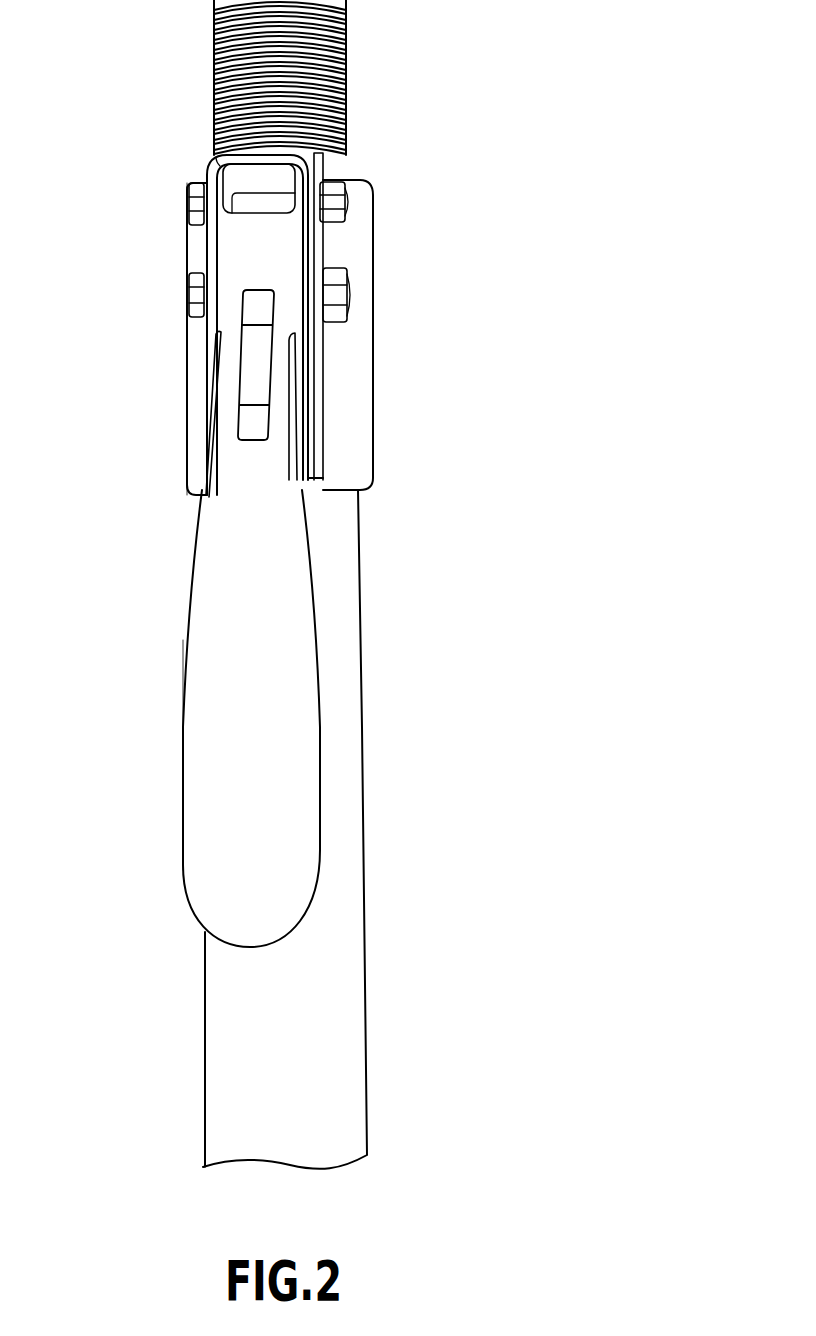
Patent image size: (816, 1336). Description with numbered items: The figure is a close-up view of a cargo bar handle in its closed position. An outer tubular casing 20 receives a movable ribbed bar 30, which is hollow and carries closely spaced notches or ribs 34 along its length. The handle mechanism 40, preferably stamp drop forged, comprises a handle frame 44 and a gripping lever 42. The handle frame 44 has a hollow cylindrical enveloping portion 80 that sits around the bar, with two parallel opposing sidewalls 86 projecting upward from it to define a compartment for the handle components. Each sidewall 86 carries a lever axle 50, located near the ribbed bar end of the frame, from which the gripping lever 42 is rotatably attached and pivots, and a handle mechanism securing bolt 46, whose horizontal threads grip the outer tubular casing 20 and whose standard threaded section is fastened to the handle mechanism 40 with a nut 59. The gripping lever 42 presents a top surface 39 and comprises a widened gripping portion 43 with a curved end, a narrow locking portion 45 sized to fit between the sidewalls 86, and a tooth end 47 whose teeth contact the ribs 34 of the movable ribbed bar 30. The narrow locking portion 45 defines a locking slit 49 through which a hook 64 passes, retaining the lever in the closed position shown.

The outer tubular casing 20 is at (352, 1020).
The movable ribbed bar 30 is at (332, 82).
The ribs 34 is at (347, 25).
The top surface 39 is at (222, 595).
The handle mechanism 40 is at (170, 319).
The gripping lever 42 is at (210, 675).
The widened gripping portion 43 is at (205, 842).
The handle frame 44 is at (378, 420).
The narrow locking portion 45 is at (255, 270).
The handle mechanism securing bolt 46 is at (345, 290).
The tooth end 47 is at (220, 157).
The locking slit 49 is at (250, 427).
The lever axle 50 is at (350, 212).
The nut 59 is at (190, 281).
The hook 64 is at (250, 368).
The hollow cylindrical enveloping portion 80 is at (362, 360).
The opposing sidewalls 86 is at (347, 212).